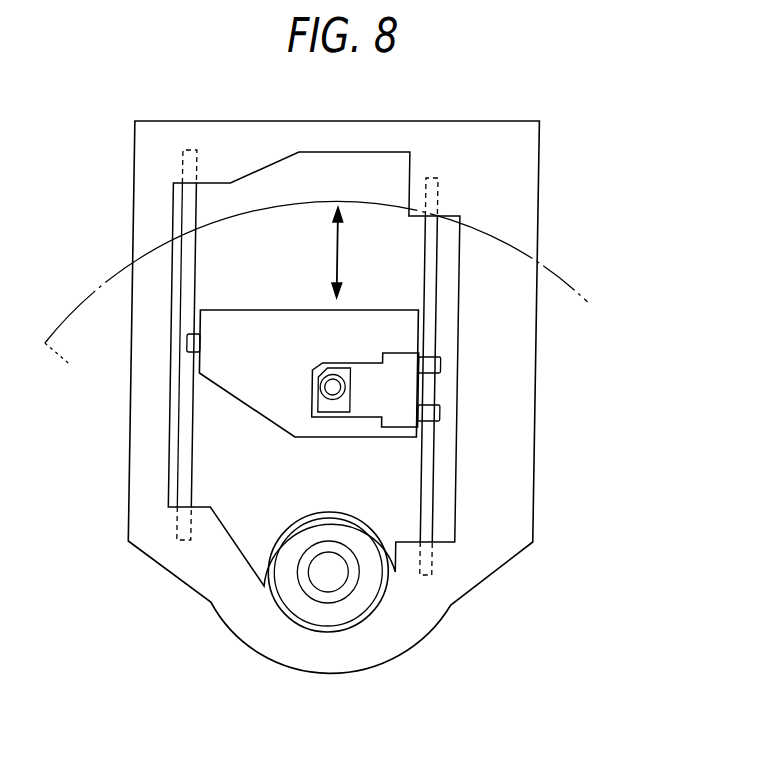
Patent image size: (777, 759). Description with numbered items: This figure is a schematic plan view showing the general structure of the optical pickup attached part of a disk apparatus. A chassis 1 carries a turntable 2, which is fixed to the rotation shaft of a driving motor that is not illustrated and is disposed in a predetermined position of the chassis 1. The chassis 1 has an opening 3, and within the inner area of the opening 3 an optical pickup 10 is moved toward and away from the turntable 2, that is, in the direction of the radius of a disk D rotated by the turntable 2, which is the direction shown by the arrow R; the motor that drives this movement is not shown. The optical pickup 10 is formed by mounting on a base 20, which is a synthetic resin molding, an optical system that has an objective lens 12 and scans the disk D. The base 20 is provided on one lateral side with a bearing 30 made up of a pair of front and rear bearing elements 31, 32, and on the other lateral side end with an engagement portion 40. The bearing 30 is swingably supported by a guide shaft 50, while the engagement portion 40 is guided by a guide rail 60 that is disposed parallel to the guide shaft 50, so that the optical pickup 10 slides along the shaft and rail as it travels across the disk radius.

The chassis 1 is at (130, 480).
The turntable 2 is at (333, 633).
The opening 3 is at (170, 420).
The optical pickup 10 is at (375, 303).
The objective lens 12 is at (317, 377).
The base 20 is at (263, 308).
The bearing 30 is at (476, 365).
The bearing element 31 is at (456, 405).
The bearing element 32 is at (440, 365).
The engagement portion 40 is at (186, 344).
The guide shaft 50 is at (430, 492).
The guide rail 60 is at (193, 466).
The disk D is at (92, 298).
The arrow R is at (345, 252).